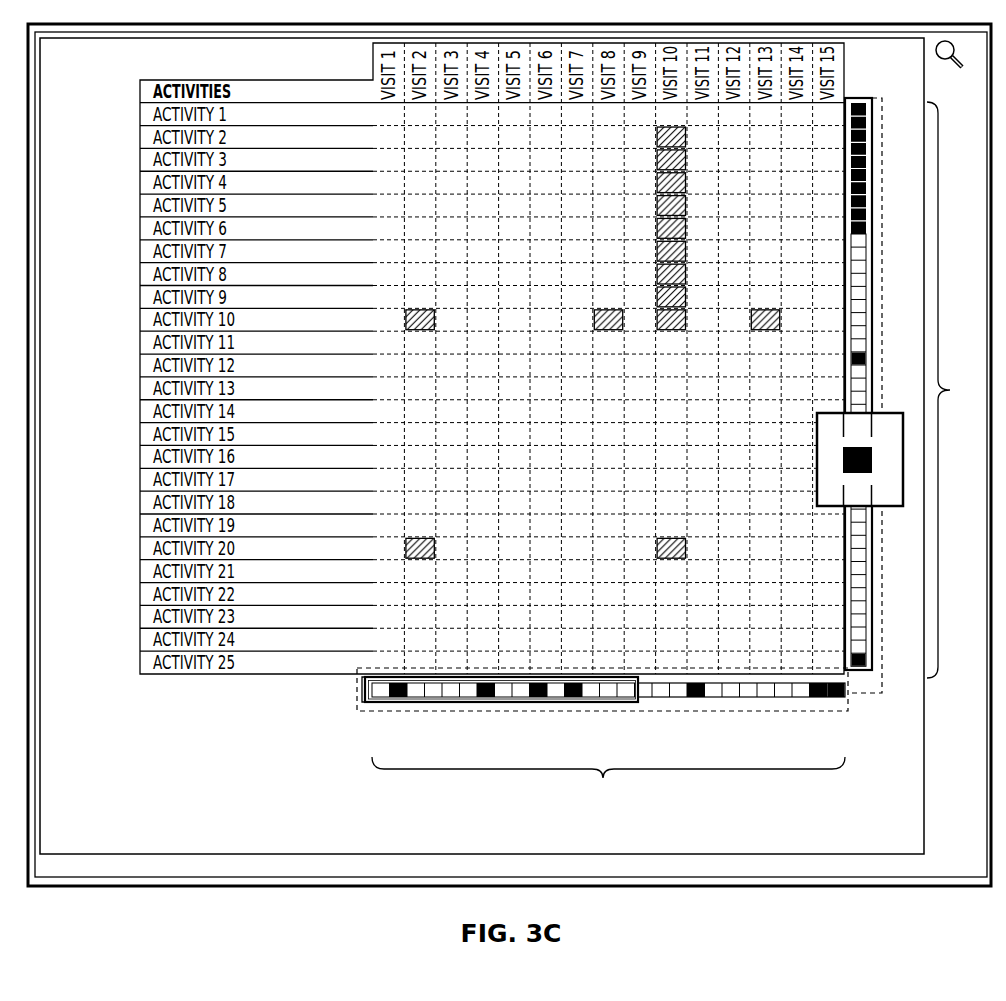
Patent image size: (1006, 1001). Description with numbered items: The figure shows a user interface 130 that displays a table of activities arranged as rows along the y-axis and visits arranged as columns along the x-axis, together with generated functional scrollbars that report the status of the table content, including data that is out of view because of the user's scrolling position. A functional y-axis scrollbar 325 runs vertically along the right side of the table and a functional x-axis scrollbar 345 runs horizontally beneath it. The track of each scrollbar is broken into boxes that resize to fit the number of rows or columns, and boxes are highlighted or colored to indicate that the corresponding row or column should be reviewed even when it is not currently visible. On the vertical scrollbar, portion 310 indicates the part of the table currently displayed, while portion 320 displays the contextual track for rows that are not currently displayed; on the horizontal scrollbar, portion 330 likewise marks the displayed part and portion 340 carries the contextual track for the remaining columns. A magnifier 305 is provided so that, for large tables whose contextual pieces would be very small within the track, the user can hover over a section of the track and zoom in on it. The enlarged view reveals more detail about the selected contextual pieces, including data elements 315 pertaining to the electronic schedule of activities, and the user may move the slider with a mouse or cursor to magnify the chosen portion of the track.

The user interface 130 is at (172, 855).
The magnifier 305 is at (947, 62).
The portion of functional scrollbar 310 is at (870, 96).
The data elements 315 is at (903, 487).
The portion of functional scrollbar 320 is at (868, 695).
The functional y-axis scrollbar 325 is at (950, 390).
The portion of functional scrollbar 330 is at (360, 700).
The portion of functional scrollbar 340 is at (757, 712).
The functional x-axis scrollbar 345 is at (608, 784).